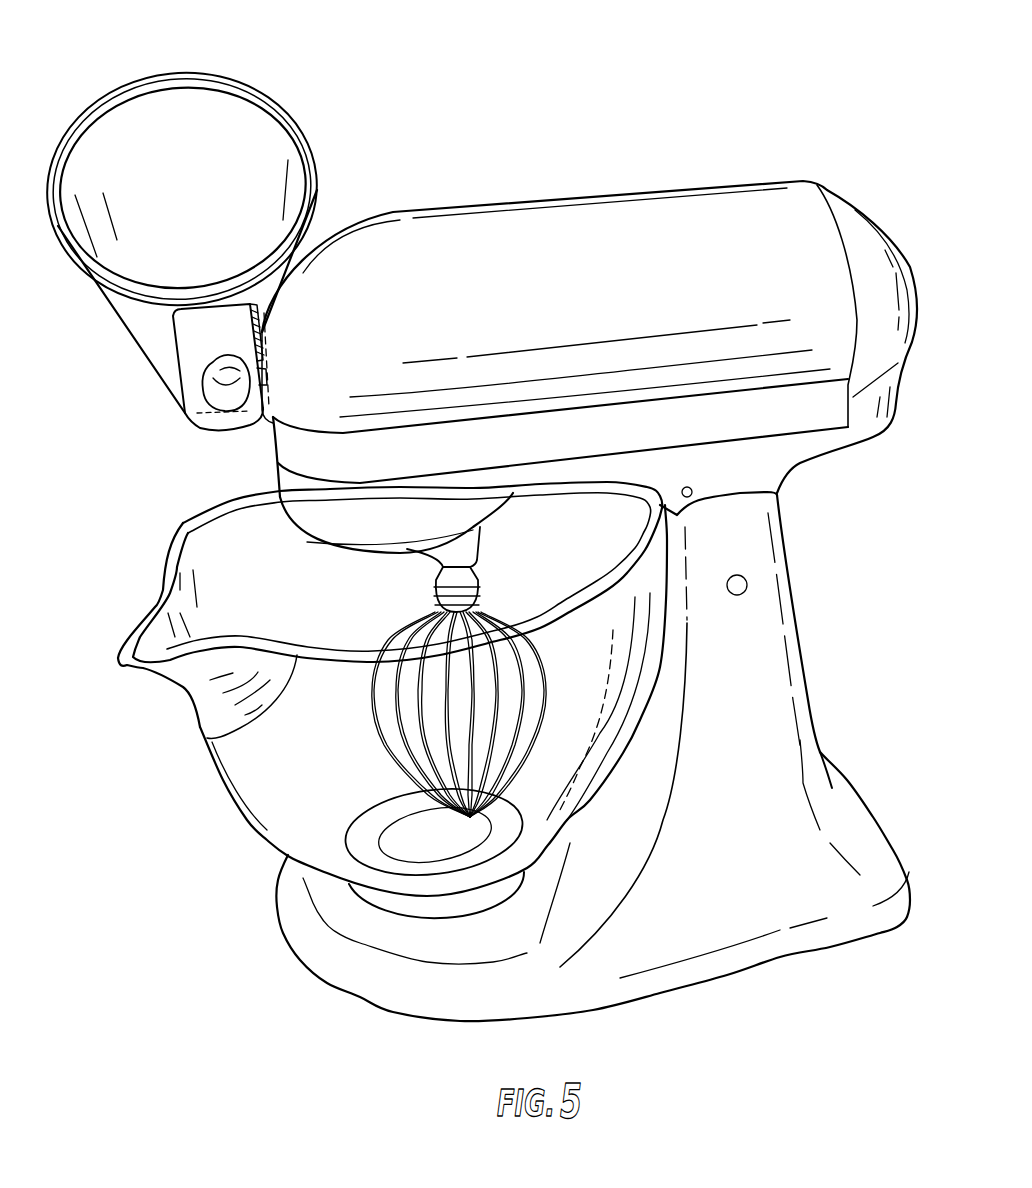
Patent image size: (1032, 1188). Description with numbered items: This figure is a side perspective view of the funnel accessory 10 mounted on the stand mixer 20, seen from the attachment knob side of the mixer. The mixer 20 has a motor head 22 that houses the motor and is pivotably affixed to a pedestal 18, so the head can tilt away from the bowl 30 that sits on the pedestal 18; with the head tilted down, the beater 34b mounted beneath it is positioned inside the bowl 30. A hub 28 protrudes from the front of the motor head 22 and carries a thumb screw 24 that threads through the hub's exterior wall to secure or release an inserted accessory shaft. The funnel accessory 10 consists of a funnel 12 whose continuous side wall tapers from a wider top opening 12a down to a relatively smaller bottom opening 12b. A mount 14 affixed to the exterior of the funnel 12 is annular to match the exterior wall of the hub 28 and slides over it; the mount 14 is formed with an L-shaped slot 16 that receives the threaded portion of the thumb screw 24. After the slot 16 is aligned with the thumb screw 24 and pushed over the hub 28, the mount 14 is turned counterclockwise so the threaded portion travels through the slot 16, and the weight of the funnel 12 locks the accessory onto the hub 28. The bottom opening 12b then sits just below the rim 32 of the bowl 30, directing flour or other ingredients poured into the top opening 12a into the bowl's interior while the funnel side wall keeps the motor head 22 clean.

The funnel accessory 10 is at (313, 64).
The funnel 12 is at (160, 377).
The top opening 12a is at (164, 68).
The bottom opening 12b is at (220, 445).
The mount 14 is at (197, 335).
The slot 16 is at (266, 372).
The pedestal 18 is at (773, 833).
The mixer 20 is at (850, 640).
The motor head 22 is at (551, 223).
The thumb screw 24 is at (220, 393).
The hub 28 is at (263, 333).
The bowl 30 is at (263, 793).
The rim 32 is at (217, 743).
The beater 34b is at (433, 610).